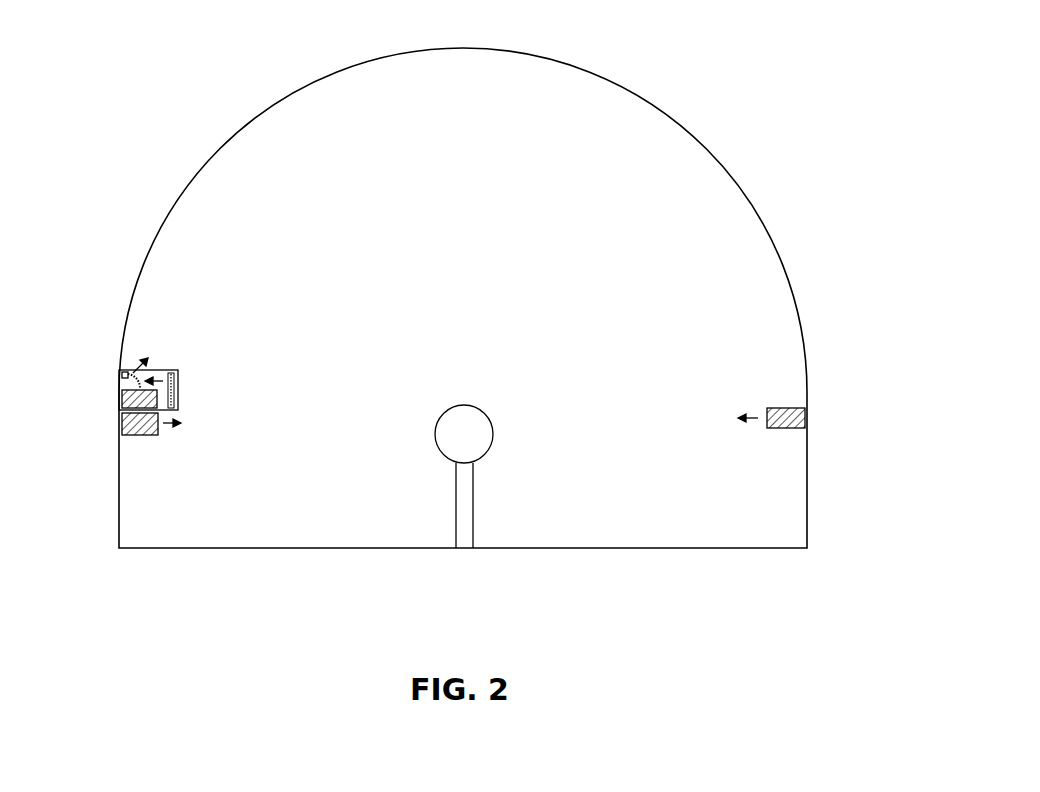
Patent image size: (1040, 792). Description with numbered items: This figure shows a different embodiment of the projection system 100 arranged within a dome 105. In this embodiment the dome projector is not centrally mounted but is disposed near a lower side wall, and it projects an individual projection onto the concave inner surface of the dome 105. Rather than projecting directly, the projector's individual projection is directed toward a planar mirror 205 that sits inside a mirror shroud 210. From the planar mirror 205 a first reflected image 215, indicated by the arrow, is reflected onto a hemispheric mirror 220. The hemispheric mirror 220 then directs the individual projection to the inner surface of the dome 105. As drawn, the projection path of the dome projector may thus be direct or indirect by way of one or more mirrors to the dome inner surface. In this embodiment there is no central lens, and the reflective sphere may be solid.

The projection system 100 is at (170, 678).
The dome 105 is at (638, 72).
The planar mirror 205 is at (170, 375).
The mirror shroud 210 is at (180, 380).
The first reflected image 215 is at (163, 378).
The hemispheric mirror 220 is at (121, 378).